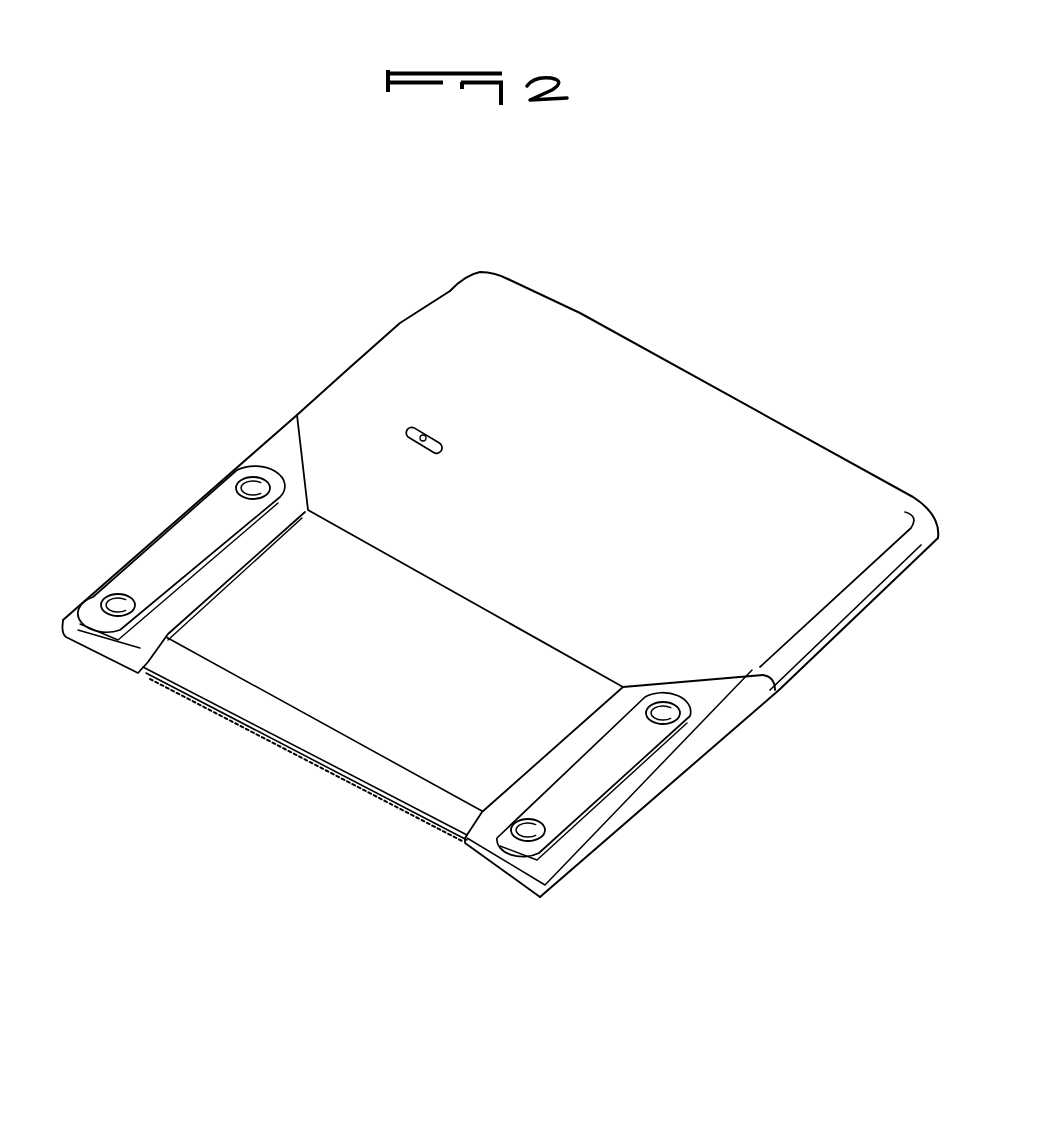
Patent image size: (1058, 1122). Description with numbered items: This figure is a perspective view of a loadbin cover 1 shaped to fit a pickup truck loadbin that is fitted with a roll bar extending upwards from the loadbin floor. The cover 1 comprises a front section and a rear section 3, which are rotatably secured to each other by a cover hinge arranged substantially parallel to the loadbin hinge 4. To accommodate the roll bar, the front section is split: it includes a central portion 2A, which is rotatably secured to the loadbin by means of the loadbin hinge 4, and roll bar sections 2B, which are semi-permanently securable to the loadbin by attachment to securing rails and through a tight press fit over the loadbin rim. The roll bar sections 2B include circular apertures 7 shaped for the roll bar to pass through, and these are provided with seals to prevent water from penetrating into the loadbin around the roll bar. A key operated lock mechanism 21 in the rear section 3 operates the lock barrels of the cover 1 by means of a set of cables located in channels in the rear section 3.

The loadbin cover 1 is at (795, 973).
The central portion 2A is at (413, 780).
The roll bar sections 2B is at (137, 642).
The rear section 3 is at (763, 640).
The loadbin hinge 4 is at (297, 757).
The circular apertures 7 is at (252, 485).
The key operated lock mechanism 21 is at (443, 443).